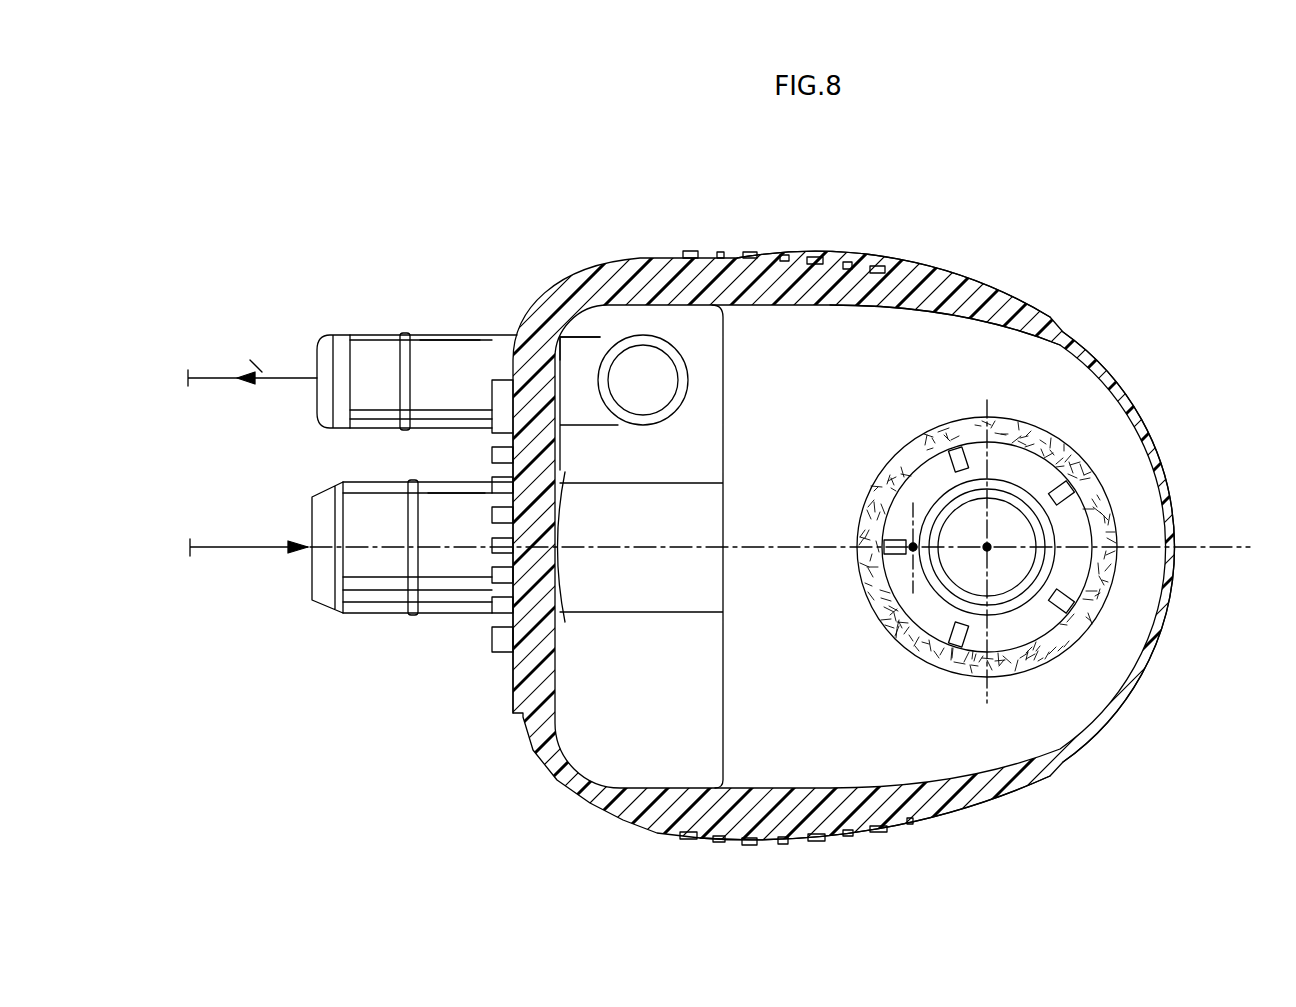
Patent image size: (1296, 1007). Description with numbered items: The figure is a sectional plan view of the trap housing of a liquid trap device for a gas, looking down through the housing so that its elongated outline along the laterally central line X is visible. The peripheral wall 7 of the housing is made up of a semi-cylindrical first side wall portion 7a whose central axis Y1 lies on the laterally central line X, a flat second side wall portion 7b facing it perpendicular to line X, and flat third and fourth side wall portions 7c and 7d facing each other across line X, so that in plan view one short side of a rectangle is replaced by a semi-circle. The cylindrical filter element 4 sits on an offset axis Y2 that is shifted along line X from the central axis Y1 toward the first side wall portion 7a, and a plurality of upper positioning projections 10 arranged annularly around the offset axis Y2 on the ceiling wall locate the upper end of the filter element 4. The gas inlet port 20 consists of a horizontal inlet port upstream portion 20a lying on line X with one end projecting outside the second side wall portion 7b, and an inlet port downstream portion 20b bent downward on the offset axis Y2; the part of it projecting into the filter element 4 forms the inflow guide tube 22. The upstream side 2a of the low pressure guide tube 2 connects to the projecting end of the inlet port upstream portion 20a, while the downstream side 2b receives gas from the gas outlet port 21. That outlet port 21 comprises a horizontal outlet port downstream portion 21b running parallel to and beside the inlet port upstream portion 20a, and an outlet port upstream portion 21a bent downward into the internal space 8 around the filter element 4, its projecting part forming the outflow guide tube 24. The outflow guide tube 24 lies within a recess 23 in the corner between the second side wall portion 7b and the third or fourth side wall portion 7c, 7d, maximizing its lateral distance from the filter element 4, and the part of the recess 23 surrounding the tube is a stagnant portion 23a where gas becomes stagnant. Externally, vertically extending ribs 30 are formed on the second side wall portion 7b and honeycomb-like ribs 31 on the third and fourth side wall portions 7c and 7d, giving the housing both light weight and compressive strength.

The low pressure guide tube 2 is at (235, 370).
The upstream side of the low pressure guide tube 2a is at (248, 550).
The downstream side of the low pressure guide tube 2b is at (262, 381).
The cylindrical filter element 4 is at (1010, 430).
The peripheral wall 7 is at (1005, 283).
The first side wall portion 7a is at (1173, 518).
The second side wall portion 7b is at (540, 630).
The third side wall portion 7c is at (795, 838).
The fourth side wall portion 7d is at (858, 257).
The internal space 8 is at (790, 624).
The upper positioning projections 10 is at (957, 633).
The gas inlet port 20 is at (412, 592).
The inlet port upstream portion 20a is at (450, 600).
The inlet port downstream portion 20b is at (1018, 540).
The gas outlet port 21 is at (417, 336).
The outlet port upstream portion 21a is at (648, 375).
The outlet port downstream portion 21b is at (472, 352).
The inflow guide tube 22 is at (1020, 600).
The recess 23 is at (722, 437).
The stagnant portion 23a is at (660, 325).
The outflow guide tube 24 is at (687, 383).
The vertically extending ribs 30 is at (495, 513).
The honeycomb-like ribs 31 is at (795, 252).
The laterally central line X is at (1245, 547).
The central axis Y1 is at (910, 540).
The offset axis Y2 is at (990, 544).